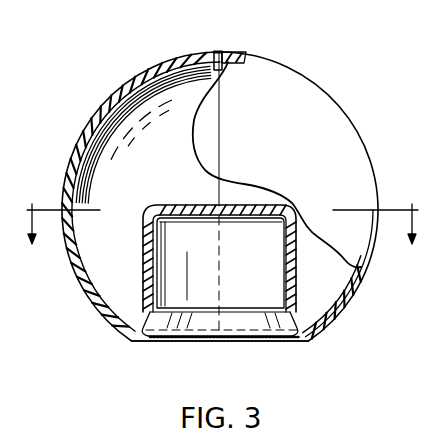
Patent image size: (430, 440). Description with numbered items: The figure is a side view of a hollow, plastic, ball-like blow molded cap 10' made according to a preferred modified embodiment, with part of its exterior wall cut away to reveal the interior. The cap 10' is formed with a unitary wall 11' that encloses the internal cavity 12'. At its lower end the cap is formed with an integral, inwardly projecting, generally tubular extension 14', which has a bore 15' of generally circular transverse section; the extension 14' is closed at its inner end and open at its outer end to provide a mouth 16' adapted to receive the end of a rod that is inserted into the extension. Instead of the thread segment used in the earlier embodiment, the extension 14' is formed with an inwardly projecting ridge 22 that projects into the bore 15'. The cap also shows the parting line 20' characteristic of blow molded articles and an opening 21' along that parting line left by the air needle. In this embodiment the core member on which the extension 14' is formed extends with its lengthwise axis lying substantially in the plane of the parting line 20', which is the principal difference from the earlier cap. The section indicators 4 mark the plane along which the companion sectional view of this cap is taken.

The section line 4- 4 is at (222, 236).
The cap 10' is at (220, 189).
The unitary wall 11' is at (211, 196).
The internal cavity 12' is at (116, 134).
The tubular extension 14' is at (197, 258).
The bore 15' is at (244, 263).
The mouth 16' is at (220, 344).
The parting line 20' is at (277, 159).
The opening 21' is at (237, 44).
The inwardly projecting ridge 22 is at (200, 306).